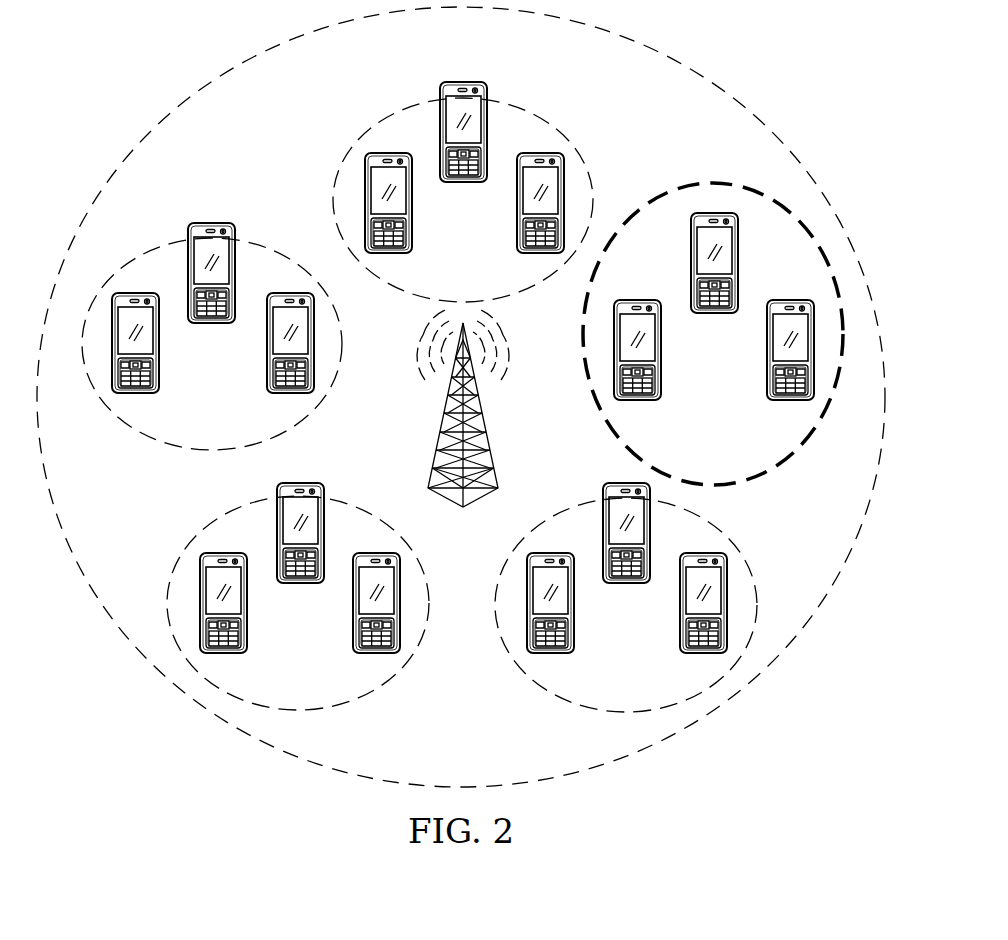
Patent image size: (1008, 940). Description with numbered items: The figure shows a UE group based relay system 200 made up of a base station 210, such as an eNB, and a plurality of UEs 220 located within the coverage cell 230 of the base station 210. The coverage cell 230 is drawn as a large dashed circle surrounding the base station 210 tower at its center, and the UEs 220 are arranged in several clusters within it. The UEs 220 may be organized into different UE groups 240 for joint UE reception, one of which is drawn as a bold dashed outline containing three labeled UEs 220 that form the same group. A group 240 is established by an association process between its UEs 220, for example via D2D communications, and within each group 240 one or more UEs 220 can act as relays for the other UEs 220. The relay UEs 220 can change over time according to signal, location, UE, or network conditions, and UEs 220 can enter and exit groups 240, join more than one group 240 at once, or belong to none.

The UE group based relay system 200 is at (788, 74).
The base station 210 is at (436, 447).
The UE 220 is at (739, 268).
The coverage cell 230 is at (230, 71).
The UE group 240 is at (713, 358).